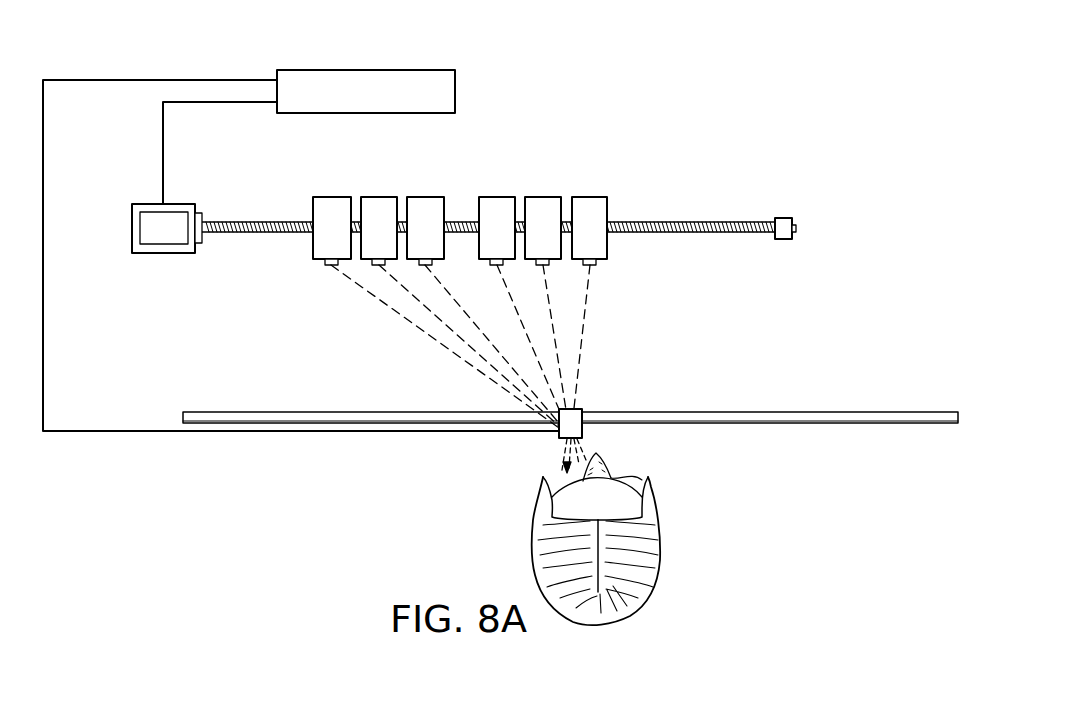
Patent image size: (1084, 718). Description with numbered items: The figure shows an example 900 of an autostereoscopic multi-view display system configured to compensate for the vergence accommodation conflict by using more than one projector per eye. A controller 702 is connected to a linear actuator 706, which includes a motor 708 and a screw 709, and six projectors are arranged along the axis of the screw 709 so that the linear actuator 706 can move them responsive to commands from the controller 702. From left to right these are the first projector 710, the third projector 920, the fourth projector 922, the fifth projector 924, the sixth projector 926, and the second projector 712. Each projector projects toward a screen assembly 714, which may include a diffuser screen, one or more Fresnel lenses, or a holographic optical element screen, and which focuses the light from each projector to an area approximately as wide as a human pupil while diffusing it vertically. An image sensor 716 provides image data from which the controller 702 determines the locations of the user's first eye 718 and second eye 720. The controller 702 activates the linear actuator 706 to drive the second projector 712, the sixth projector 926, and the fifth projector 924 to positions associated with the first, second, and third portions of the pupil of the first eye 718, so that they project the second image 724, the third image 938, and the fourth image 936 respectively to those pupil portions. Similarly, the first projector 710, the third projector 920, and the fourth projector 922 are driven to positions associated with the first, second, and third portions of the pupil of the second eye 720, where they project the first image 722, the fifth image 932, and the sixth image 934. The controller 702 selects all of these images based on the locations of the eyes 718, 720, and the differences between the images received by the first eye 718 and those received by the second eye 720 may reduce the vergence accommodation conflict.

The example of the system 900 is at (698, 113).
The controller 702 is at (366, 68).
The linear actuator 706 is at (130, 183).
The motor 708 is at (132, 222).
The screw 709 is at (782, 218).
The first projector 710 is at (313, 210).
The third projector 920 is at (378, 197).
The fourth projector 922 is at (425, 197).
The fifth projector 924 is at (495, 197).
The sixth projector 926 is at (543, 197).
The second projector 712 is at (607, 210).
The first image 722 is at (420, 330).
The fifth image 932 is at (390, 277).
The sixth image 934 is at (455, 298).
The fourth image 936 is at (512, 305).
The third image 938 is at (545, 282).
The second image 724 is at (583, 335).
The screen assembly 714 is at (265, 412).
The image sensor 716 is at (583, 430).
The first eye 718 is at (543, 477).
The second eye 720 is at (648, 477).